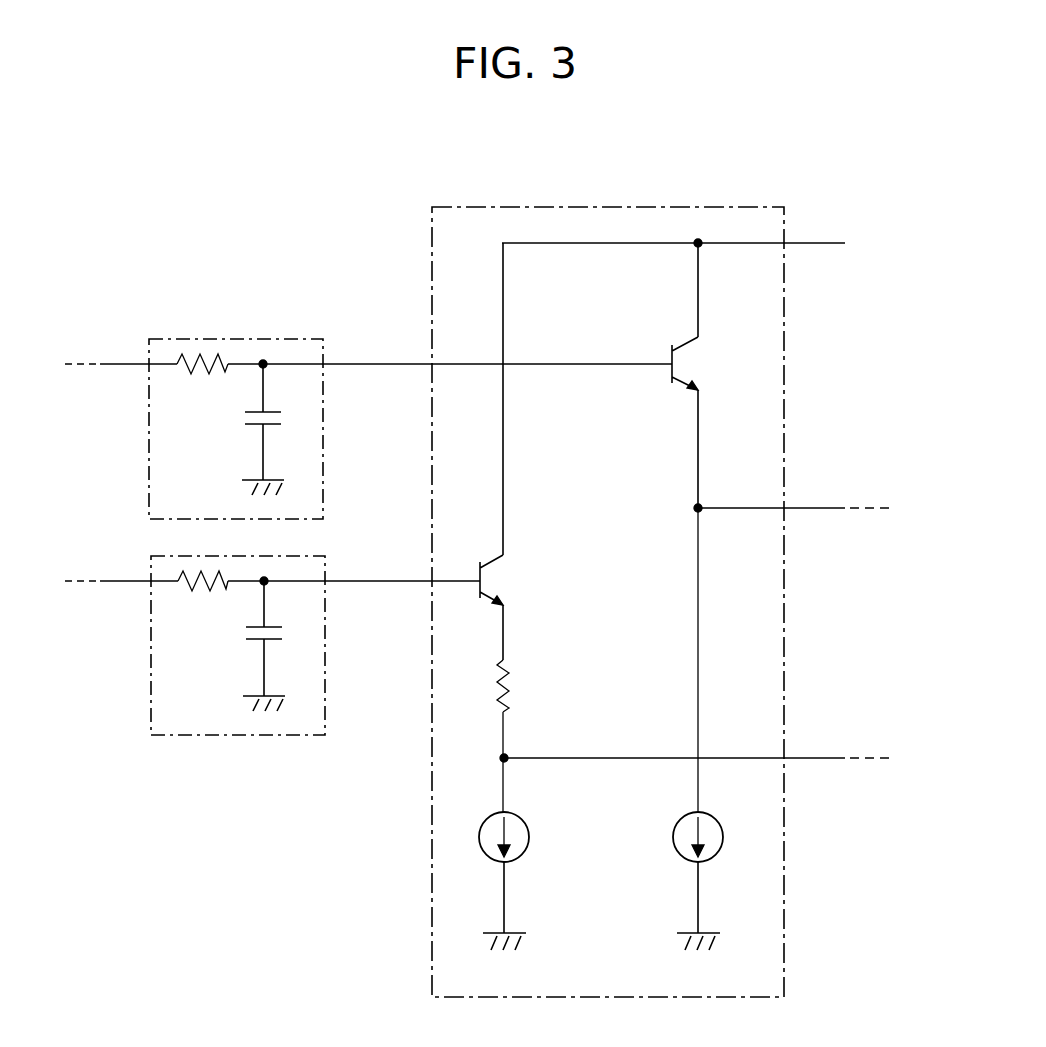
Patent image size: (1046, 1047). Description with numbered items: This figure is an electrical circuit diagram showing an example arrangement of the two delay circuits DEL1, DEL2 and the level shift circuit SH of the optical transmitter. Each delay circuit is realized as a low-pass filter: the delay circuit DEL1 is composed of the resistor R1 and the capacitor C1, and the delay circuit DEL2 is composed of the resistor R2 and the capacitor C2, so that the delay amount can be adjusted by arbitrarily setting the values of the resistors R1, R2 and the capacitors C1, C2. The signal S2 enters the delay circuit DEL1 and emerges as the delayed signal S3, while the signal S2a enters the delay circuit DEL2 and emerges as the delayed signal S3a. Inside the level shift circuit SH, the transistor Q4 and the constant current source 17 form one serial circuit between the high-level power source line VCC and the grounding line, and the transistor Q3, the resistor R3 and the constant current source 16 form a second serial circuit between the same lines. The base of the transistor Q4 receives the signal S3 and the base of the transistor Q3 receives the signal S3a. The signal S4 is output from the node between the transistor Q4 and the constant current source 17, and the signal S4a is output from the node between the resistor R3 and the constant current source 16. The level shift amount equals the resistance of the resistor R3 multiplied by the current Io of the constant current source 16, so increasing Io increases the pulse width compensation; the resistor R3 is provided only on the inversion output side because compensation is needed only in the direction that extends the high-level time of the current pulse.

The level shift circuit SH is at (590, 206).
The power source line of the high level VCC is at (698, 244).
The signal S2 is at (121, 349).
The signal S3 is at (450, 349).
The signal S2a is at (121, 566).
The signal S3a is at (354, 566).
The delay circuit DEL1 is at (236, 402).
The delay circuit DEL2 is at (238, 675).
The resistor R1 is at (201, 372).
The resistor R2 is at (201, 588).
The resistor R3 is at (513, 690).
The capacitor C1 is at (275, 426).
The capacitor C2 is at (277, 642).
The transistor Q3 is at (492, 562).
The transistor Q4 is at (683, 346).
The signal S4 is at (793, 495).
The signal S4a is at (696, 745).
The constant current source 16 is at (522, 822).
The constant current source 17 is at (716, 822).